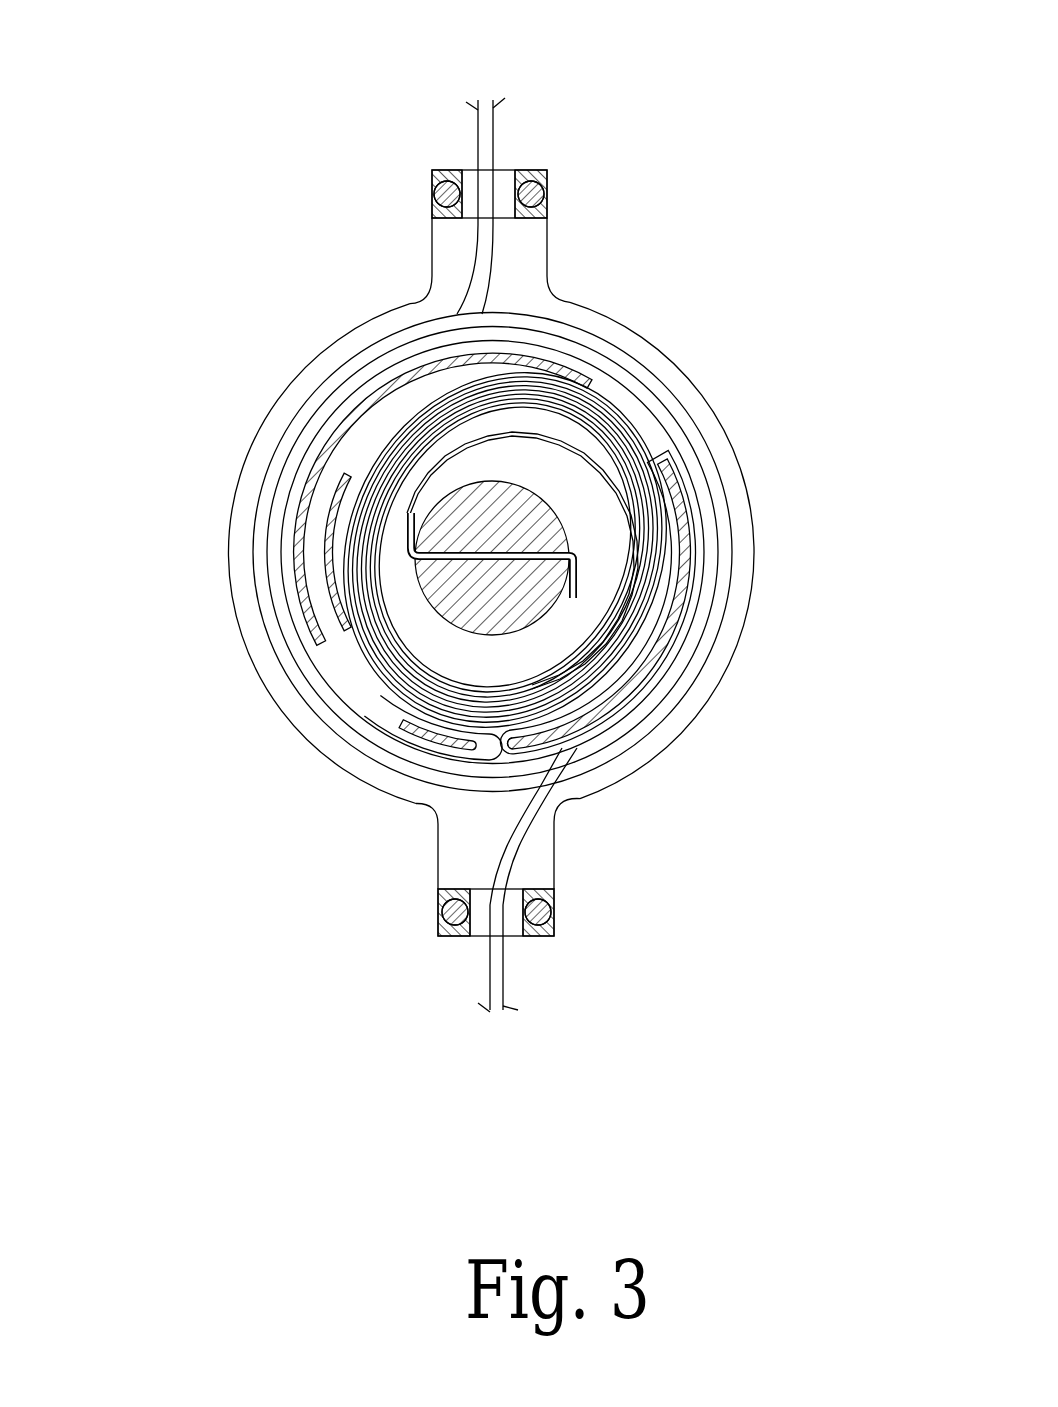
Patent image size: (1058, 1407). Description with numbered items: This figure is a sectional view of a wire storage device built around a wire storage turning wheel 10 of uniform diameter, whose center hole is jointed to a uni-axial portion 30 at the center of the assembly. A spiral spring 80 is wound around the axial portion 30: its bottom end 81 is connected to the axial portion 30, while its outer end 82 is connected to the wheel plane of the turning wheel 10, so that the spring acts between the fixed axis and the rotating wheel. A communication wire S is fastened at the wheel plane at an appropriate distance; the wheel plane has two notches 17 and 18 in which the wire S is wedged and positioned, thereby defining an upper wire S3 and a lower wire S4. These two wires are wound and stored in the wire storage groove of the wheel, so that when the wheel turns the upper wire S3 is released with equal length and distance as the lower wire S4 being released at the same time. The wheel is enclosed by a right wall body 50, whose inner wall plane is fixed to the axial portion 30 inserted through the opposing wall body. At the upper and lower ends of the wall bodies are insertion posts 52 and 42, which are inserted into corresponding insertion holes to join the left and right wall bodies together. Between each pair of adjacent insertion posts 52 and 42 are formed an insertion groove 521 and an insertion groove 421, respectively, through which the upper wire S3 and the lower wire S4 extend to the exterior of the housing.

The wire storage turning wheel 10 is at (410, 377).
The notch 17 is at (470, 372).
The notch 18 is at (497, 757).
The uni-axial portion 30 is at (500, 590).
The insertion post 42 is at (438, 925).
The right wall body 50 is at (692, 403).
The insertion post 52 is at (432, 190).
The spiral spring 80 is at (460, 362).
The bottom end 81 is at (478, 567).
The outer end 82 is at (520, 752).
The insertion groove 421 is at (478, 930).
The insertion groove 521 is at (470, 180).
The communication wire S is at (267, 467).
The upper wire S3 is at (490, 152).
The lower wire S4 is at (513, 862).